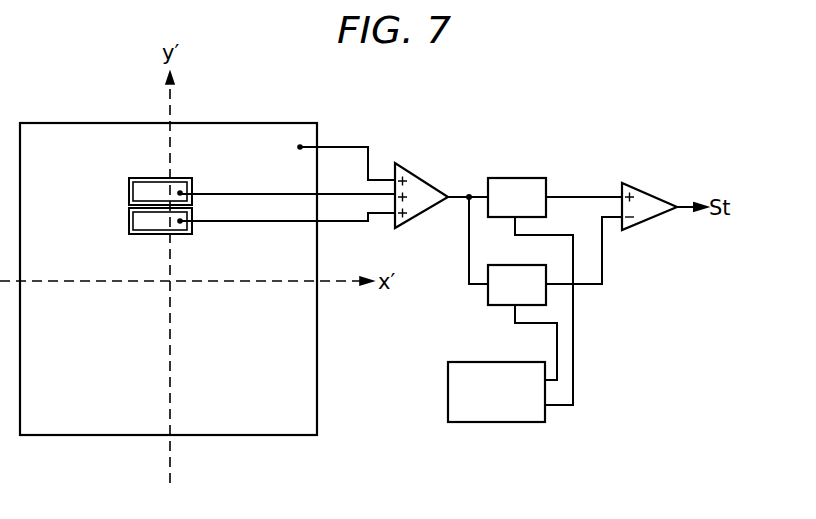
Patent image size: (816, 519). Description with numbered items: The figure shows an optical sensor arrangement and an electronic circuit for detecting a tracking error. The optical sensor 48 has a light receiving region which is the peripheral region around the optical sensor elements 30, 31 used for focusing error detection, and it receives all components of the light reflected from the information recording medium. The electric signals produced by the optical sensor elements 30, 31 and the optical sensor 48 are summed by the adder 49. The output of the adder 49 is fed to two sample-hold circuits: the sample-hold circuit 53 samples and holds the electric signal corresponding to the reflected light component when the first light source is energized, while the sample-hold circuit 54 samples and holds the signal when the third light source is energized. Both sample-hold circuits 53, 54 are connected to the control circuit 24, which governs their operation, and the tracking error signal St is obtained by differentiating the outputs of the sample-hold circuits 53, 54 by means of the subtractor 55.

The optical sensor 48 is at (281, 130).
The optical sensor element 30 is at (144, 190).
The optical sensor element 31 is at (140, 225).
The adder 49 is at (428, 183).
The sample-hold circuit 53 is at (528, 178).
The sample-hold circuit 54 is at (505, 265).
The subtractor 55 is at (658, 195).
The control circuit 24 is at (529, 422).